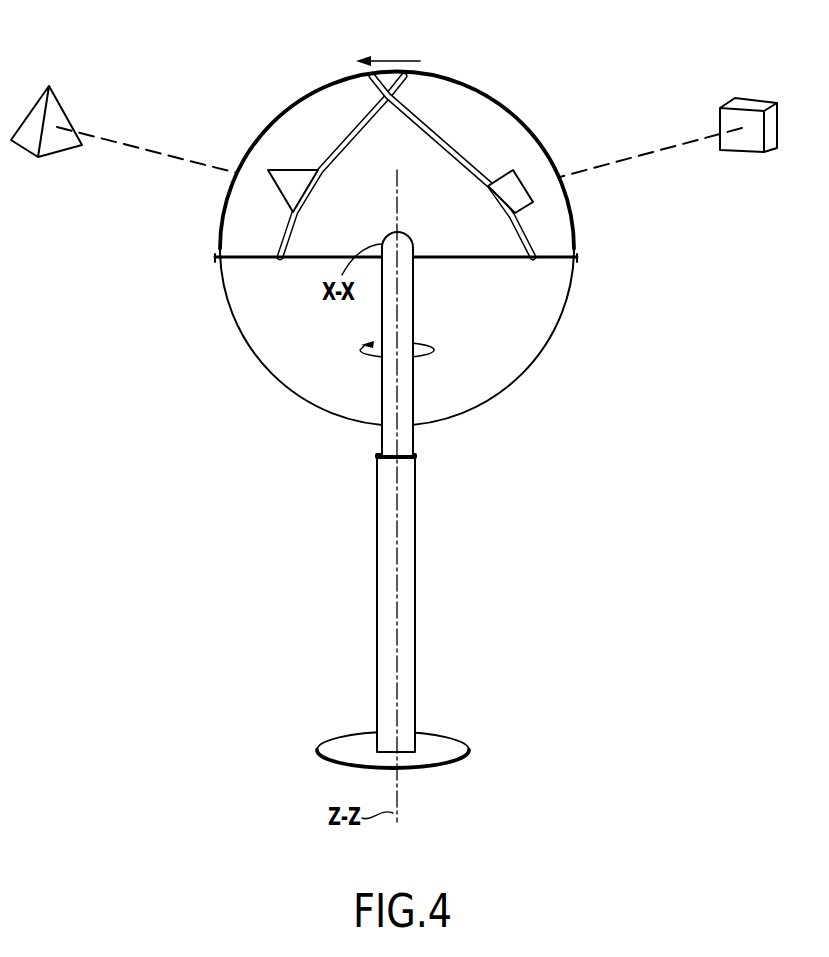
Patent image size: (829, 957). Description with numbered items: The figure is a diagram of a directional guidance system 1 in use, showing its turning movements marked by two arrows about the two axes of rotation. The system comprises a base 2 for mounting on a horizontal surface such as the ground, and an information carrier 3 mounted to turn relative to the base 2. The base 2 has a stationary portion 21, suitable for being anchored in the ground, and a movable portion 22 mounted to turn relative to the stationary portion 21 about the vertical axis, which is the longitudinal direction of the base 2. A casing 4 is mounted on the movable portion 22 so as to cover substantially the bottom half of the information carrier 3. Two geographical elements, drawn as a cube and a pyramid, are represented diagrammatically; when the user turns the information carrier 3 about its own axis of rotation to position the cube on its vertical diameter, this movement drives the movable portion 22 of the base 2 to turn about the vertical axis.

The directional guidance system 1 is at (297, 73).
The base 2 is at (320, 537).
The stationary portion 21 is at (377, 626).
The movable portion 22 is at (378, 440).
The information carrier 3 is at (503, 103).
The casing 4 is at (518, 353).